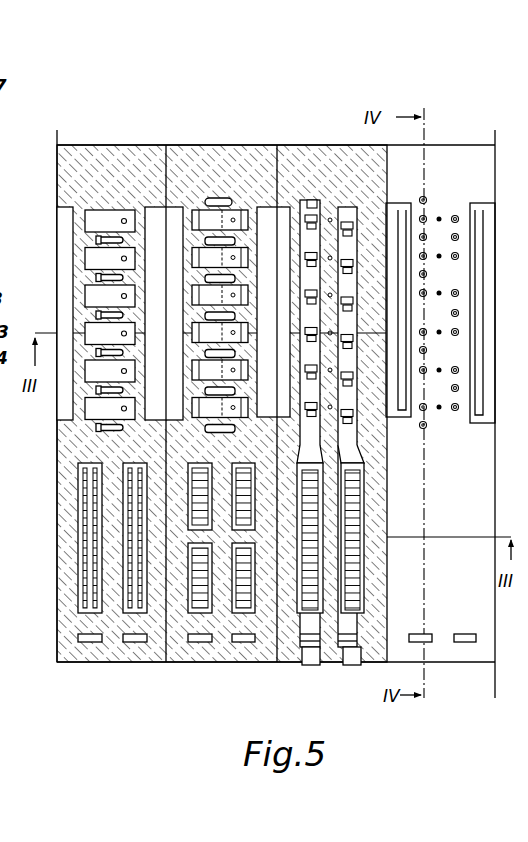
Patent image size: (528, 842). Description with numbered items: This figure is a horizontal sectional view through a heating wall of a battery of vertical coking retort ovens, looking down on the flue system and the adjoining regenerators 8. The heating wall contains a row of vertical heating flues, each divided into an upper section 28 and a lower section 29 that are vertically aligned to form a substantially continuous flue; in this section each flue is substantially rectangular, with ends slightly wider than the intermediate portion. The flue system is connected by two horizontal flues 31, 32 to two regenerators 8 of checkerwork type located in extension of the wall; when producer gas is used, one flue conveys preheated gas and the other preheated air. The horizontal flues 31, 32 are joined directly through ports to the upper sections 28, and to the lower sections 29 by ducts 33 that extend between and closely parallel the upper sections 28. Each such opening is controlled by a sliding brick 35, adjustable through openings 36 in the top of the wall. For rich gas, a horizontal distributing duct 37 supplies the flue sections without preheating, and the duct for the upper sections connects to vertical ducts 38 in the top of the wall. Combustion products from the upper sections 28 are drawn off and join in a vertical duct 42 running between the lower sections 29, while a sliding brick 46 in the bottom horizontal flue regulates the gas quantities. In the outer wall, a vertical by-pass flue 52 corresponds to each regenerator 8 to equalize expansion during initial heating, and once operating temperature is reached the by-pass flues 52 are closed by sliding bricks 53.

The sliding brick 46 is at (0, 183).
The lower sections of the heating flues 29 is at (93, 256).
The vertical duct 42 is at (93, 393).
The ducts 33 is at (212, 198).
The upper sections of the heating flues 28 is at (242, 207).
The horizontal distributing duct 37 is at (231, 200).
The sliding brick 35 is at (313, 200).
The horizontal flue 31 is at (318, 165).
The horizontal flue 32 is at (340, 207).
The openings 36 is at (455, 216).
The vertical ducts 38 is at (440, 374).
The regenerators 8 is at (130, 577).
The by-pass flue 52 is at (138, 643).
The sliding bricks 53 is at (351, 660).